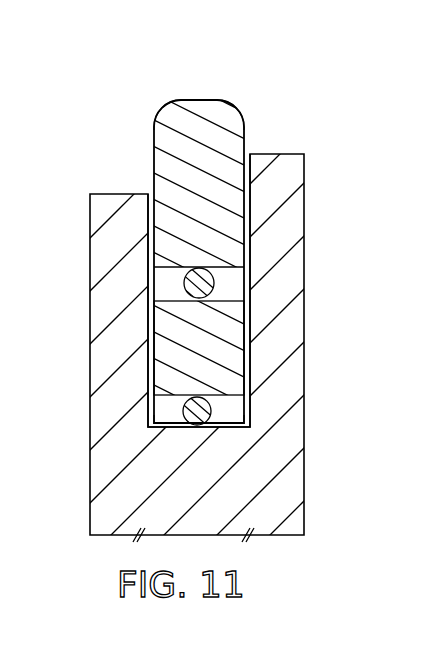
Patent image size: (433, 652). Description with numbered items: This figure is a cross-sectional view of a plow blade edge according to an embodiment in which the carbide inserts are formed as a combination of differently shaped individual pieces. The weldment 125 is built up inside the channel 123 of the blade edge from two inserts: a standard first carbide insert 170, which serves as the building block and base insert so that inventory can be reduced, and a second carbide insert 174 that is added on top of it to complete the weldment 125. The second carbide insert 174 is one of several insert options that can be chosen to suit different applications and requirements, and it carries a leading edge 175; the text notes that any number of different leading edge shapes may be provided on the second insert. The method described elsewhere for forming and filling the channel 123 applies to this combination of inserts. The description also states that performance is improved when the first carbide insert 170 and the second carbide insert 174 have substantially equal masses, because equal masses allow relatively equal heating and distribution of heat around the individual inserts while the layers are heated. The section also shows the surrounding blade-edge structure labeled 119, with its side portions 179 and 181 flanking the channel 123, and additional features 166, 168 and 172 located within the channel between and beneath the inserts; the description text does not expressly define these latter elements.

The housing body 119 is at (216, 324).
The channel 123 is at (167, 283).
The weldment 125 is at (207, 245).
The plunger bottom end 166 is at (148, 412).
The lower O-ring seal 168 is at (213, 411).
The first carbide insert 170 is at (227, 355).
The upper O-ring seal 172 is at (223, 288).
The second carbide insert 174 is at (227, 203).
The leading edge 175 is at (200, 98).
The left housing wall 179 is at (113, 192).
The right housing wall 181 is at (287, 153).